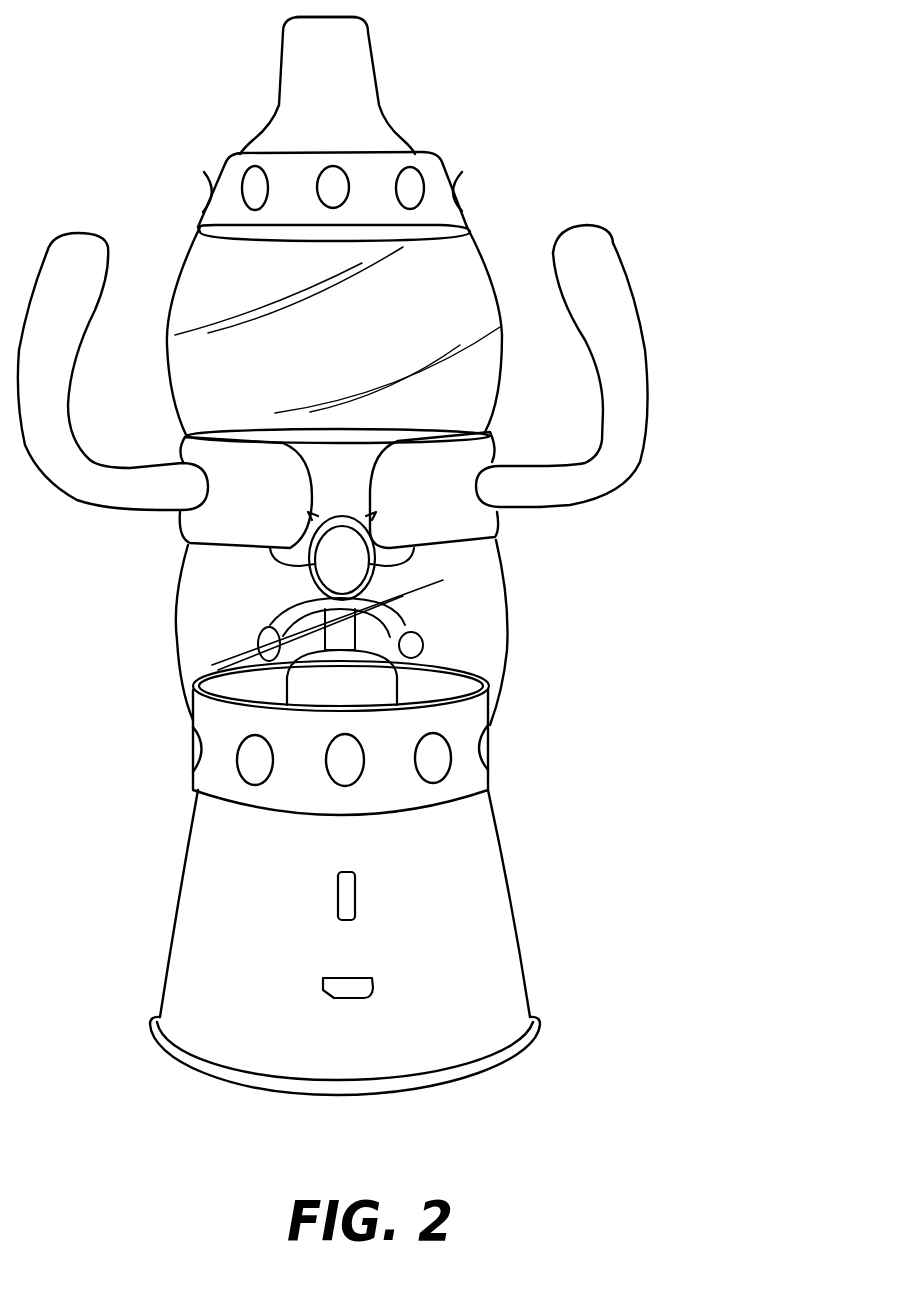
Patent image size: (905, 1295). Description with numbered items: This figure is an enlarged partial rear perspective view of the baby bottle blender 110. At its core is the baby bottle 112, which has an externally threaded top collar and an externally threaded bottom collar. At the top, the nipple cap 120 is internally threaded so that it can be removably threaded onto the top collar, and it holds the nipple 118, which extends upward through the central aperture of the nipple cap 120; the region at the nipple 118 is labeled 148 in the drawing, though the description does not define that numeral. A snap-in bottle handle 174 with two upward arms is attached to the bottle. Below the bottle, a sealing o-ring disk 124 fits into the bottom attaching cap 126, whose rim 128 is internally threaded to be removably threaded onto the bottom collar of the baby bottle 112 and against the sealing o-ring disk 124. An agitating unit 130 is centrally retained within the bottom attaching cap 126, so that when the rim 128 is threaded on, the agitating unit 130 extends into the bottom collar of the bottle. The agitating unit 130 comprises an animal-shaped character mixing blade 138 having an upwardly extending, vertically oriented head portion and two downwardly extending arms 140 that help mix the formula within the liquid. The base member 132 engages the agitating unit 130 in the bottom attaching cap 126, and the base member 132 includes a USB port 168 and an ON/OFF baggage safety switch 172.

The baby bottle blender 110 is at (702, 237).
The baby bottle 112 is at (480, 575).
The nipple 118 is at (360, 73).
The nipple cap 120 is at (422, 182).
The sealing o-ring disk 124 is at (383, 688).
The bottom attaching cap 126 is at (197, 753).
The rim 128 is at (483, 710).
The agitating unit 130 is at (419, 634).
The base member 132 is at (488, 905).
The animal-shaped character mixing blade 138 is at (307, 577).
The arms 140 is at (268, 636).
The spout opening 148 is at (305, 74).
The USB port 168 is at (373, 982).
The ON/OFF baggage safety switch 172 is at (355, 893).
The snap-in bottle handle 174 is at (632, 374).